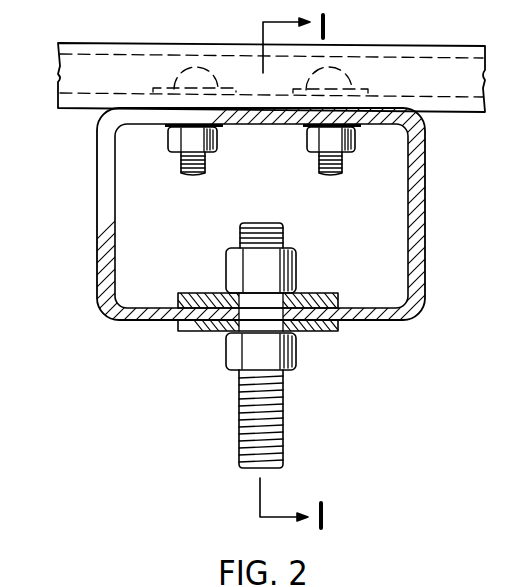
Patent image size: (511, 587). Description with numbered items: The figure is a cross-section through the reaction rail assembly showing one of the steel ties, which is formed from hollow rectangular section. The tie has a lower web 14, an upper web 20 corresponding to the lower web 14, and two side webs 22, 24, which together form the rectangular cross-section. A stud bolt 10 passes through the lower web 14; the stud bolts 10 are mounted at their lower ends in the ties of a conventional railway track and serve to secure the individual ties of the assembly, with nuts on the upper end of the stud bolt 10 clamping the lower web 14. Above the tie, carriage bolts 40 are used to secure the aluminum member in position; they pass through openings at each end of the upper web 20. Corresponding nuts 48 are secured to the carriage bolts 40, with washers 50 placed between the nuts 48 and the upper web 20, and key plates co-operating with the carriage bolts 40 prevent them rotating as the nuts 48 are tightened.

The stud bolt 10 is at (238, 415).
The lower web 14 is at (255, 237).
The upper web 20 is at (255, 220).
The side web 22 is at (255, 220).
The side web 24 is at (113, 222).
The carriage bolt 40 is at (201, 41).
The nut 48 is at (244, 157).
The washer 50 is at (164, 128).